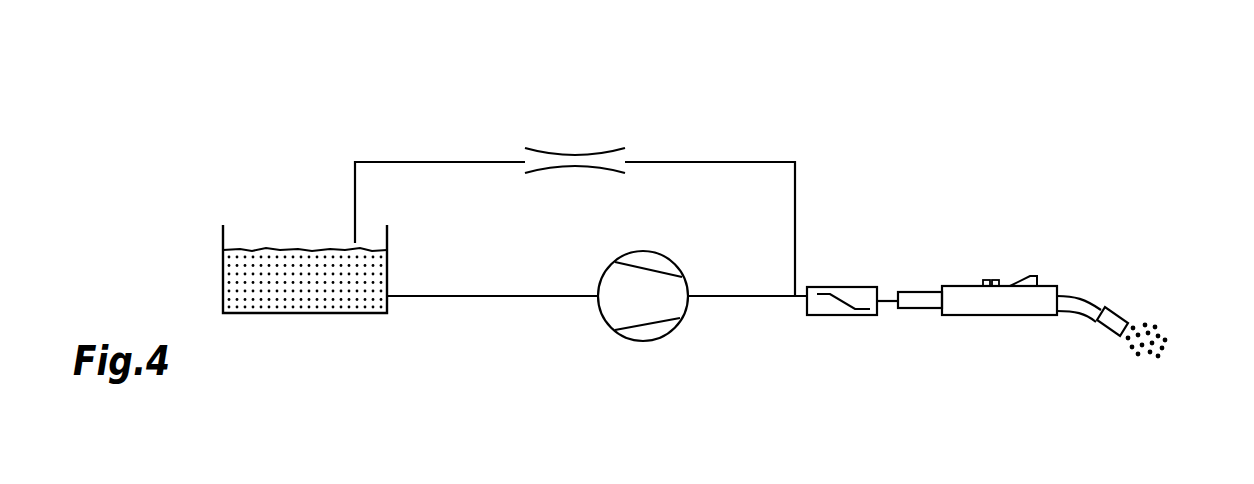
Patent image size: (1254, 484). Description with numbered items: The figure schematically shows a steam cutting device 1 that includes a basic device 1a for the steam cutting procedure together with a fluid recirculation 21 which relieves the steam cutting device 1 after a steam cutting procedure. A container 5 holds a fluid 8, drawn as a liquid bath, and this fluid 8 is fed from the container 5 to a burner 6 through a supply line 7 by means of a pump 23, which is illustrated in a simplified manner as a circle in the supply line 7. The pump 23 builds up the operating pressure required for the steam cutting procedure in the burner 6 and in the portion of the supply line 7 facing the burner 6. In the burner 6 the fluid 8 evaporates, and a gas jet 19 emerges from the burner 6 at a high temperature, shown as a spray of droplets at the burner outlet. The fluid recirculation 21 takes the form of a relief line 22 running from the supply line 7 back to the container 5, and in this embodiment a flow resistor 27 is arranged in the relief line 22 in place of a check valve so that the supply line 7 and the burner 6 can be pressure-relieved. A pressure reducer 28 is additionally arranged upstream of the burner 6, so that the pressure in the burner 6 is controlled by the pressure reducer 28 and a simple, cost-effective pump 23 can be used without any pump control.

The steam cutting device 1 is at (303, 142).
The basic device 1a is at (942, 177).
The container 5 is at (248, 333).
The burner 6 is at (983, 342).
The supply line 7 is at (502, 295).
The fluid 8 is at (301, 273).
The gas jet 19 is at (1162, 318).
The fluid recirculation 21 is at (197, 188).
The relief line 22 is at (735, 163).
The pump 23 is at (640, 298).
The flow resistor 27 is at (553, 145).
The pressure reducer 28 is at (848, 270).